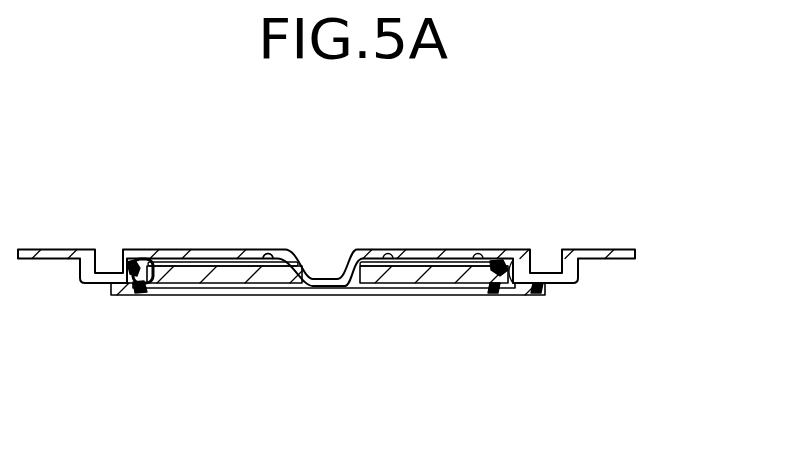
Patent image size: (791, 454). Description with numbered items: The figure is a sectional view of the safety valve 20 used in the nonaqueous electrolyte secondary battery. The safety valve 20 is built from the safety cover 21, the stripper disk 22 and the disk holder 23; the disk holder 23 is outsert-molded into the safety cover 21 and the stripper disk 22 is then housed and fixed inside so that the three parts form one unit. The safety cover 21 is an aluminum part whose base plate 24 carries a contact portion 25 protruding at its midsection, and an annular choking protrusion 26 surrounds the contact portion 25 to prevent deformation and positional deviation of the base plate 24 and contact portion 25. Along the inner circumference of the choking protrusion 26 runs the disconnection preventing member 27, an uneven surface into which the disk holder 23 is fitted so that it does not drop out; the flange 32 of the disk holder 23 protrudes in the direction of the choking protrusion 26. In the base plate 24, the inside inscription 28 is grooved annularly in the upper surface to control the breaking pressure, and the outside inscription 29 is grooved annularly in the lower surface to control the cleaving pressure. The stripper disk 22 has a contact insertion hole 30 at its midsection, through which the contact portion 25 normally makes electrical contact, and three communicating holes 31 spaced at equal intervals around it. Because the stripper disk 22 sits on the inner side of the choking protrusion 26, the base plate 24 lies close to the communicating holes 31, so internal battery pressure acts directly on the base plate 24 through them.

The safety valve 20 is at (487, 241).
The safety cover 21 is at (614, 250).
The stripper disk 22 is at (432, 285).
The disk holder 23 is at (528, 292).
The base plate 24 is at (418, 250).
The contact portion 25 is at (328, 287).
The choking protrusion 26 is at (90, 285).
The disconnection preventing member 27 is at (130, 293).
The inside inscription 28 is at (266, 252).
The outside inscription 29 is at (182, 266).
The contact insertion hole 30 is at (345, 287).
The communicating holes 31 is at (232, 278).
The flange 32 is at (492, 292).